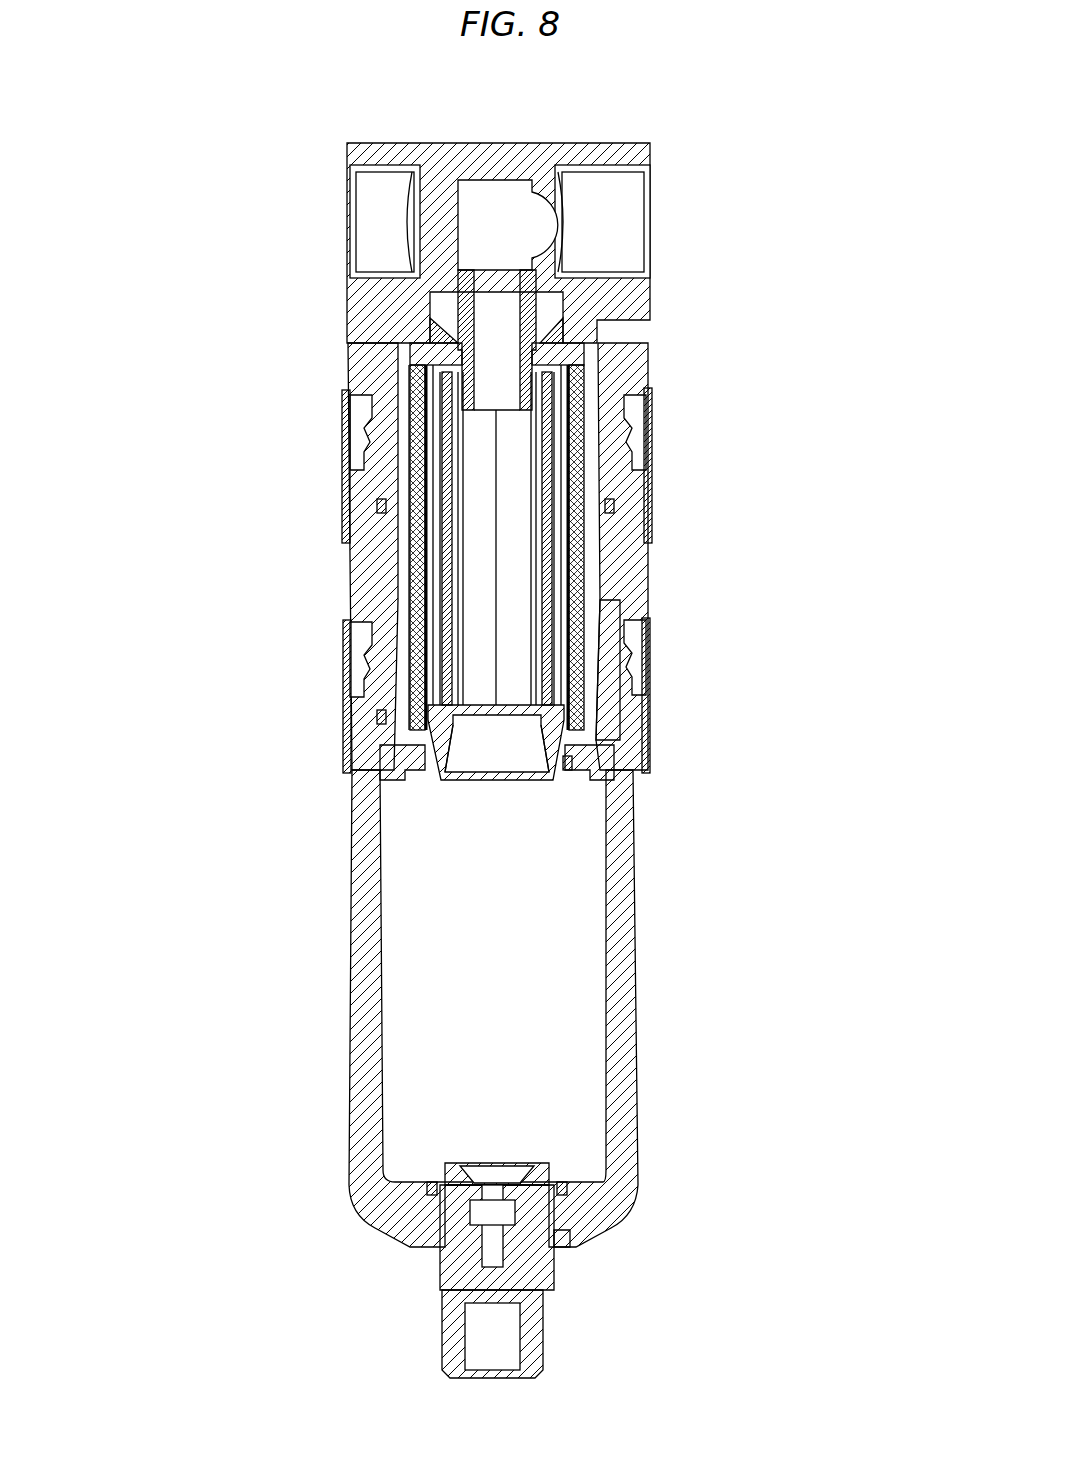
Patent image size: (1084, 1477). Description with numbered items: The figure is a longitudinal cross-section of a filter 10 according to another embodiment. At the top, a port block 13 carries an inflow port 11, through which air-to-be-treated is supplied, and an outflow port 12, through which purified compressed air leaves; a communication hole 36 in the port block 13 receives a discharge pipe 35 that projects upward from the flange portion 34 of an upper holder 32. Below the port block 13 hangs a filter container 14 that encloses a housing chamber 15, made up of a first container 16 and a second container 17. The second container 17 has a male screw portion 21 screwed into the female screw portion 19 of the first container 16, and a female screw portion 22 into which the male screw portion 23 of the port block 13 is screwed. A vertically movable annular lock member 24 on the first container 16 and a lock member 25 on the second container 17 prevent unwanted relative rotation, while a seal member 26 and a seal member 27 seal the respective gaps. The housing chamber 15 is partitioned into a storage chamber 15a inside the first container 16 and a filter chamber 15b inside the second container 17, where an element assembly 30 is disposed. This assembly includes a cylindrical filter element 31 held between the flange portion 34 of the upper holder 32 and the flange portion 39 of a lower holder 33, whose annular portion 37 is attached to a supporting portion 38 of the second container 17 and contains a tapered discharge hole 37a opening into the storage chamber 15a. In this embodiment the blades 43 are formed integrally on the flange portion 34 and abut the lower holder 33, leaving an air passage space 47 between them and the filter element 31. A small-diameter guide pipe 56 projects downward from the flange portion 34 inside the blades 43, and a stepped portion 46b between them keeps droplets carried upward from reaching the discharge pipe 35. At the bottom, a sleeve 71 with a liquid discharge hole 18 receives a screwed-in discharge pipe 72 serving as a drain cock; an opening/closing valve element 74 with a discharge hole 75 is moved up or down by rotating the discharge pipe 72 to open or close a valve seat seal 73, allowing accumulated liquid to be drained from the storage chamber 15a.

The filter 10 is at (690, 132).
The inflow port 11 is at (370, 213).
The outflow port 12 is at (627, 203).
The port block 13 is at (600, 145).
The filter container 14 is at (655, 805).
The housing chamber 15 is at (408, 924).
The storage chamber 15a is at (521, 1044).
The filter chamber 15b is at (408, 642).
The first container 16 is at (637, 1002).
The second container 17 is at (637, 580).
The liquid discharge hole 18 is at (525, 1265).
The female screw portion 19 is at (637, 700).
The male screw portion 21 is at (620, 660).
The female screw portion 22 is at (637, 483).
The male screw portion 23 is at (620, 440).
The lock member 24 is at (355, 690).
The lock member 25 is at (345, 430).
The seal member 26 is at (375, 725).
The seal member 27 is at (380, 485).
The element assembly 30 is at (605, 350).
The filter element 31 is at (580, 520).
The upper holder 32 is at (443, 283).
The lower holder 33 is at (550, 780).
The flange portion 34 is at (445, 345).
The discharge pipe 35 is at (540, 285).
The communication hole 36 is at (490, 185).
The annular portion 37 is at (437, 762).
The discharge hole 37a is at (498, 765).
The supporting portion 38 is at (395, 755).
The flange portion 39 is at (570, 745).
The blades 43 is at (448, 568).
The stepped portion 46b is at (455, 370).
The air passage space 47 is at (433, 550).
The small-diameter guide pipe 56 is at (530, 378).
The sleeve 71 is at (545, 1235).
The discharge pipe 72 is at (447, 1325).
The valve seat seal 73 is at (430, 1195).
The opening/closing valve element 74 is at (530, 1172).
The discharge hole 75 is at (490, 1225).